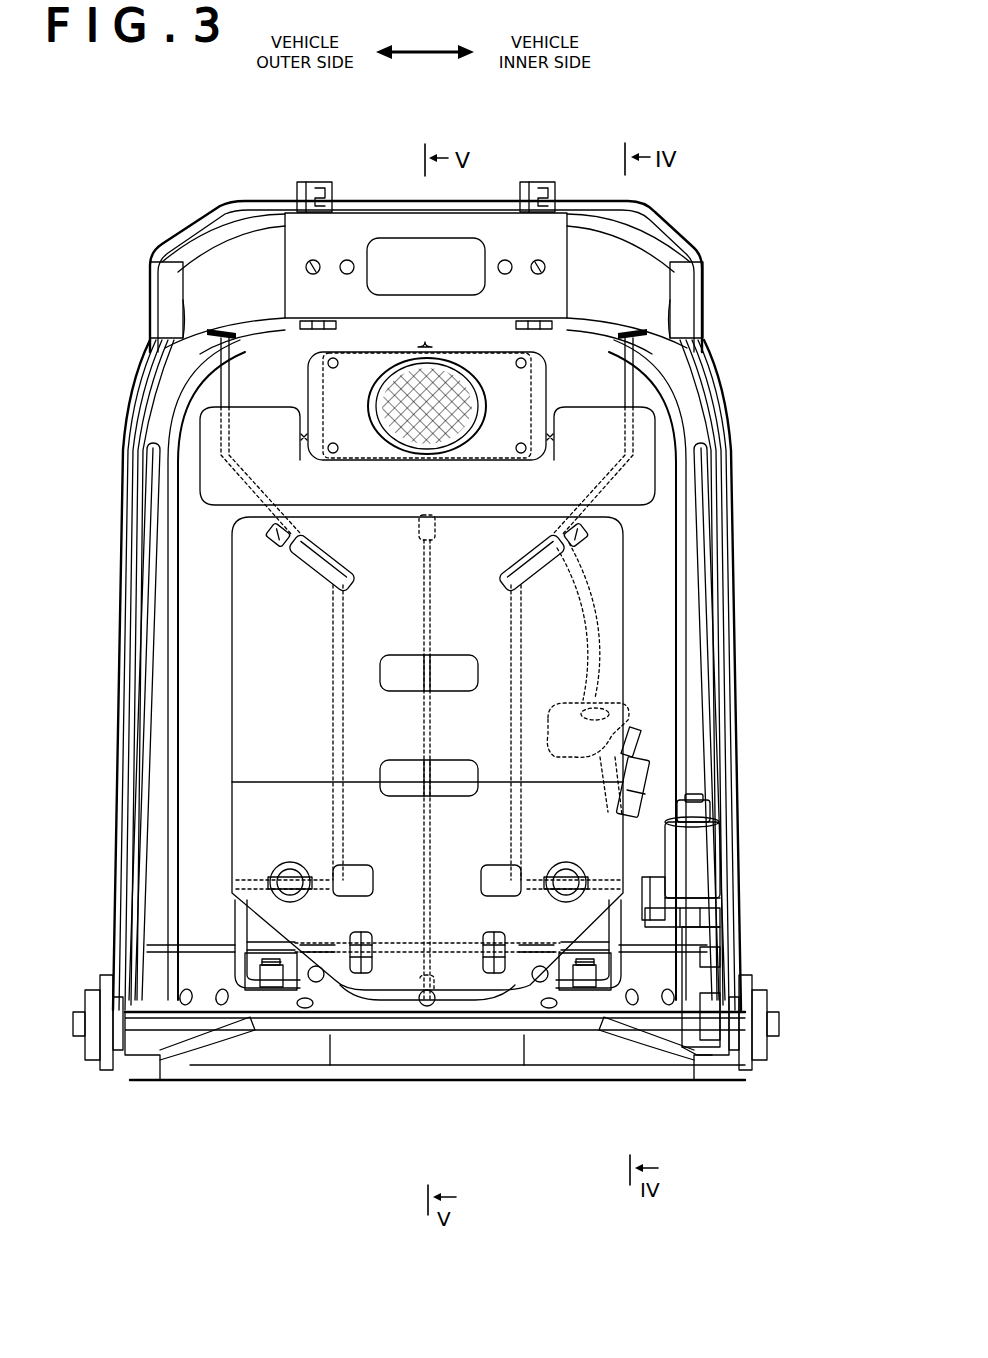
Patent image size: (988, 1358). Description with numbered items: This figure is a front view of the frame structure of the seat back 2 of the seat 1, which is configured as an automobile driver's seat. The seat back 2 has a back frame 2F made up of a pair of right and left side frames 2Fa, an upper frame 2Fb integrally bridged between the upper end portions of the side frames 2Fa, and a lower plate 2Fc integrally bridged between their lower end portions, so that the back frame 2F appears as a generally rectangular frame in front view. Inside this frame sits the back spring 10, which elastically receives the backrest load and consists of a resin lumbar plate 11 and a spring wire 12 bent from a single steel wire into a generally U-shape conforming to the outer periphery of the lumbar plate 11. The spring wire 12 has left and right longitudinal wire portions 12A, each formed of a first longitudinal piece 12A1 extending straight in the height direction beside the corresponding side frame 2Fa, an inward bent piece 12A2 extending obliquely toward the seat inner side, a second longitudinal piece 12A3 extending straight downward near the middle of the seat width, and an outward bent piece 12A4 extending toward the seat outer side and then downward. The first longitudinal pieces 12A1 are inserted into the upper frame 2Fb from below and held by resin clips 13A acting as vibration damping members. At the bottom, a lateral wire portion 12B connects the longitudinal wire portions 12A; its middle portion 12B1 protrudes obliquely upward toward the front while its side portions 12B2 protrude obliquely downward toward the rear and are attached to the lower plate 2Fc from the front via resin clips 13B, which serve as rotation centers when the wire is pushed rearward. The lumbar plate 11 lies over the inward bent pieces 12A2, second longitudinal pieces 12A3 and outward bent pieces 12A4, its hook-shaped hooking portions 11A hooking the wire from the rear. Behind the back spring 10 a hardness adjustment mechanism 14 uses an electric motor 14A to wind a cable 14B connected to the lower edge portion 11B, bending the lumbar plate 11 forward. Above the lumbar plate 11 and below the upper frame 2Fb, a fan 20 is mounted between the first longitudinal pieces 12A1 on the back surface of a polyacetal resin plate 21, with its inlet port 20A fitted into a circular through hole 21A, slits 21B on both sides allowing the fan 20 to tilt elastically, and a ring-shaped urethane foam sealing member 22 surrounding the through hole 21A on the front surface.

The seat 1 is at (427, 639).
The seat back 2 is at (700, 214).
The back frame 2F is at (728, 490).
The side frame 2Fa is at (120, 546).
The upper frame 2Fb is at (590, 252).
The lower plate 2Fc is at (424, 1008).
The back spring 10 is at (443, 764).
The lumbar plate 11 is at (606, 600).
The hooking portion 11A is at (285, 905).
The lower edge portion 11B is at (412, 966).
The spring wire 12 is at (443, 764).
The longitudinal wire portion 12A is at (422, 620).
The first longitudinal piece 12A1 is at (212, 396).
The inward bent piece 12A2 is at (318, 560).
The second longitudinal piece 12A3 is at (333, 715).
The outward bent piece 12A4 is at (566, 876).
The lateral wire portion 12B is at (428, 1061).
The middle portion 12B1 is at (474, 952).
The side portion 12B2 is at (283, 977).
The clip 13A is at (196, 330).
The clip 13B is at (267, 978).
The hardness adjustment mechanism 14 is at (716, 886).
The electric motor 14A is at (632, 773).
The cable 14B is at (423, 678).
The fan 20 is at (500, 382).
The inlet port 20A is at (402, 395).
The resin plate 21 is at (426, 304).
The through hole 21A is at (427, 281).
The slit 21B is at (302, 437).
The sealing member 22 is at (422, 358).